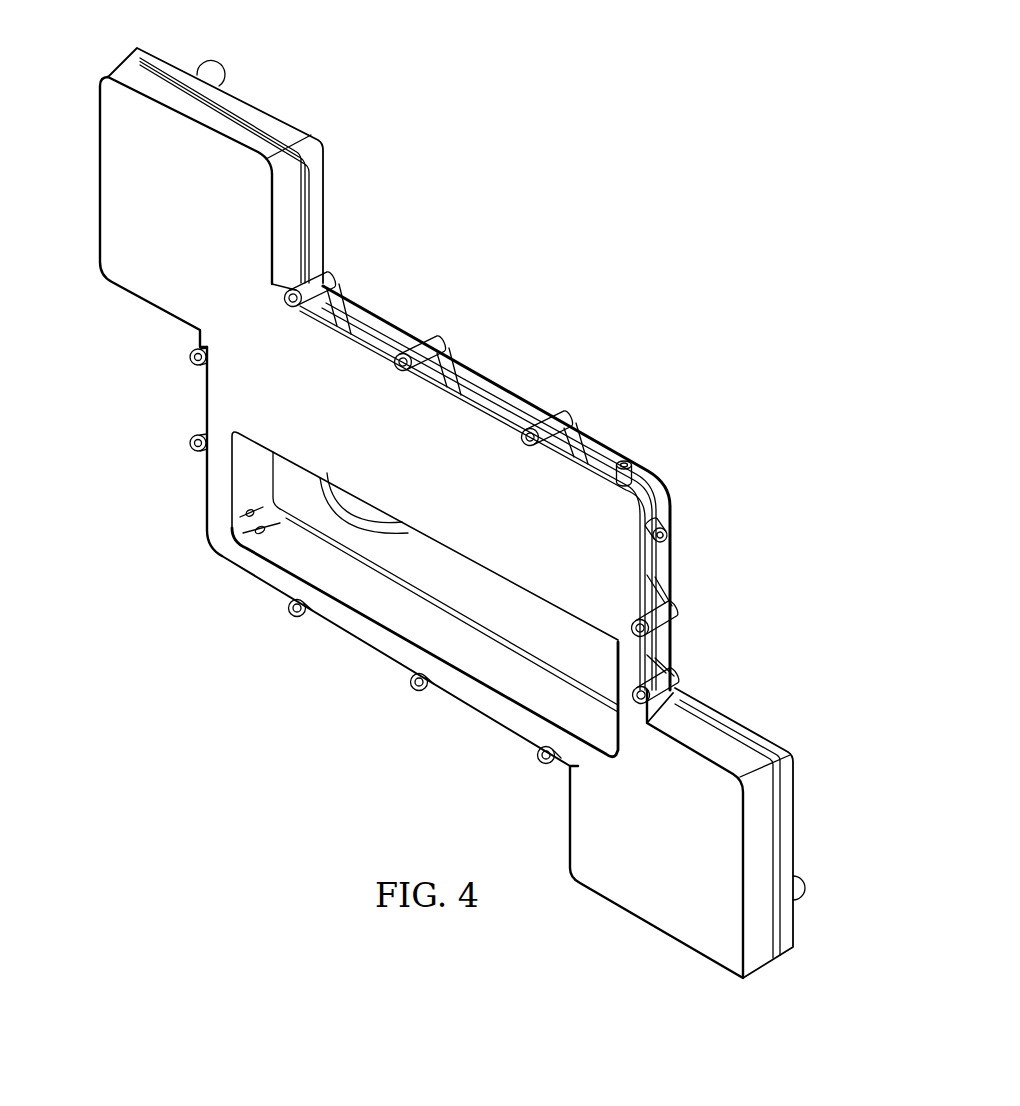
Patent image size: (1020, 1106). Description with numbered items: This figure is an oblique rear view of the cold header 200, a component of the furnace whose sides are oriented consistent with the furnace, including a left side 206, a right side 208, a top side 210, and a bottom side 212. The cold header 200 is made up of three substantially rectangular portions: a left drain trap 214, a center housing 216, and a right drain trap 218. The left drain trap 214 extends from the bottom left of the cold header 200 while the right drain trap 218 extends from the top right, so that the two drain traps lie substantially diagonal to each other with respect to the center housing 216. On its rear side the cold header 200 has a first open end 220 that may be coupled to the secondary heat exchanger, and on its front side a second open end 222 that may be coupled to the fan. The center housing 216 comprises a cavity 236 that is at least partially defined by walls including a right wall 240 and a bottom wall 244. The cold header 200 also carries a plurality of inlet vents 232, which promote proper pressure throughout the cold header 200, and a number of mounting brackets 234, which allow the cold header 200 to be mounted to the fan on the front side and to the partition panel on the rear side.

The cold header 200 is at (678, 112).
The left side 206 is at (808, 837).
The right side 208 is at (108, 324).
The top side 210 is at (522, 153).
The bottom side 212 is at (229, 853).
The left drain trap 214 is at (741, 980).
The center housing 216 is at (358, 337).
The right drain trap 218 is at (125, 58).
The first open end 220 is at (453, 553).
The second open end 222 is at (373, 507).
The inlet vents 232 is at (627, 462).
The mounting brackets 234 is at (334, 280).
The cavity 236 is at (508, 617).
The right wall 240 is at (242, 474).
The bottom wall 244 is at (290, 560).